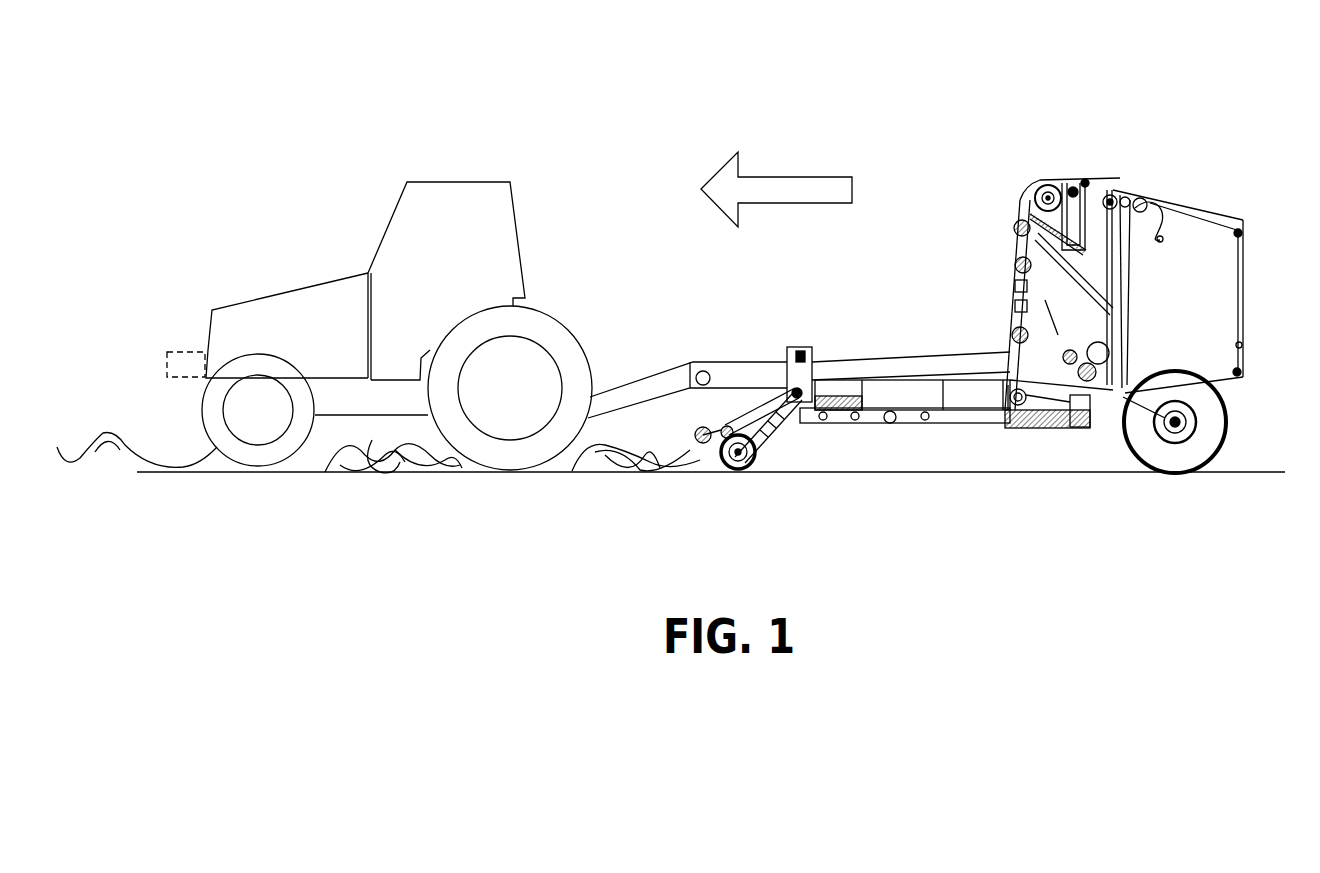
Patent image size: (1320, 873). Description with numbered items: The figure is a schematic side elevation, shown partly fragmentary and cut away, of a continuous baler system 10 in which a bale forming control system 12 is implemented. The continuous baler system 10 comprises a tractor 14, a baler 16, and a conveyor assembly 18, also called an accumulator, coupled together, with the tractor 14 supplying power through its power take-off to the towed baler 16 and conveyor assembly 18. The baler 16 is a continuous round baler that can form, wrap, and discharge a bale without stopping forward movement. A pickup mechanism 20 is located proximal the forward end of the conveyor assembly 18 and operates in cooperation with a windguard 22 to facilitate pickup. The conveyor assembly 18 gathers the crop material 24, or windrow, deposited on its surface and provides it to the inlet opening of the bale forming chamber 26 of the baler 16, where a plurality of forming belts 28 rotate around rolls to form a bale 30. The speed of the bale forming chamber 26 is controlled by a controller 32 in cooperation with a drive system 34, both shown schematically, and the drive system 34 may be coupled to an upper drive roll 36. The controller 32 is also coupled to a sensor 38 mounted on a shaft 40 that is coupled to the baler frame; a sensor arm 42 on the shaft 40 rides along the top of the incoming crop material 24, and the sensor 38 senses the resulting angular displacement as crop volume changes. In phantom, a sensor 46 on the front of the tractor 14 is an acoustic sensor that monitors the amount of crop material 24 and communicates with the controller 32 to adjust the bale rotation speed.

The continuous baler system 10 is at (1238, 118).
The bale forming control system 12 is at (985, 297).
The tractor 14 is at (510, 182).
The baler 16 is at (1243, 245).
The conveyor assembly 18 is at (862, 333).
The pickup mechanism 20 is at (785, 443).
The windguard 22 is at (723, 427).
The crop material 24 is at (613, 470).
The bale forming chamber 26 is at (1197, 313).
The forming belts 28 is at (1058, 322).
The bale 30 is at (1109, 356).
The controller 32 is at (1012, 305).
The drive system 34 is at (1012, 280).
The upper drive roll 36 is at (1040, 190).
The sensor 38 is at (1012, 404).
The shaft 40 is at (1018, 405).
The sensor arm 42 is at (1045, 431).
The sensor 46 is at (167, 352).